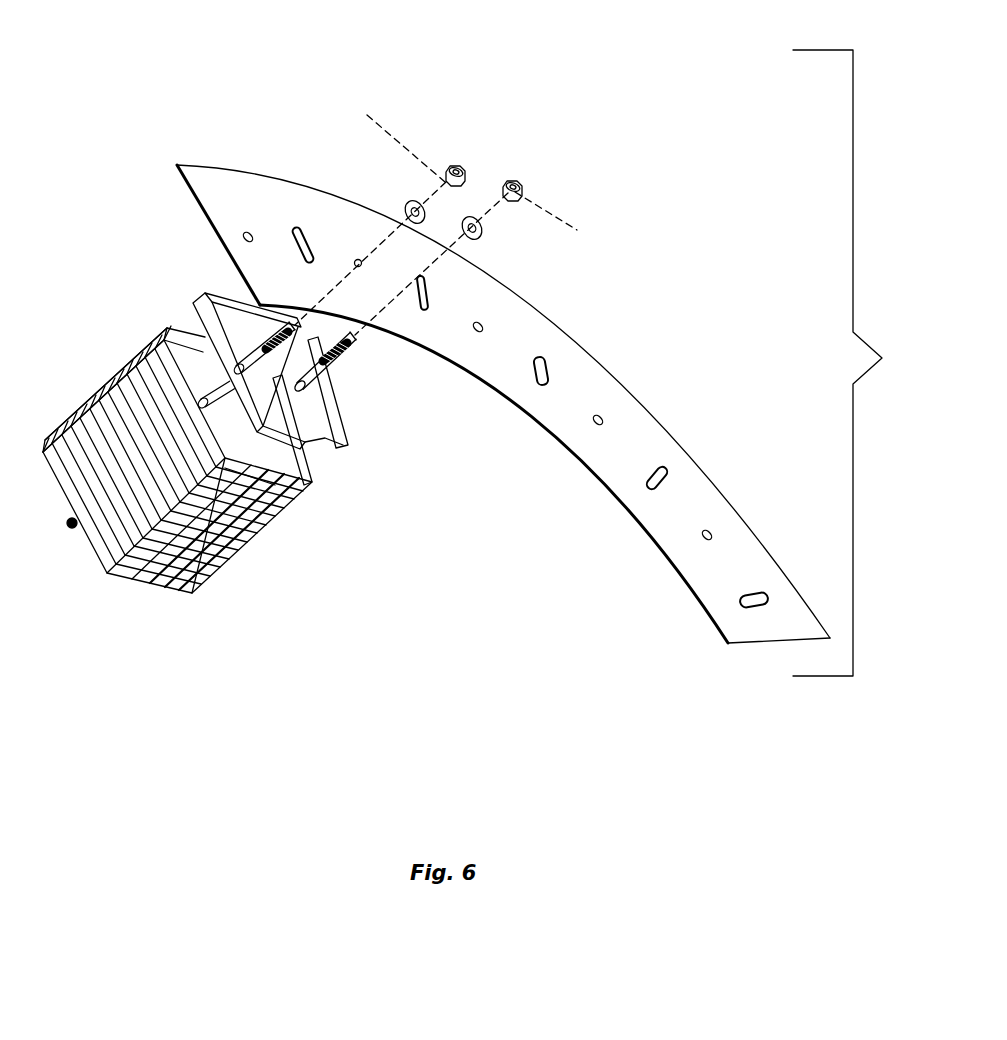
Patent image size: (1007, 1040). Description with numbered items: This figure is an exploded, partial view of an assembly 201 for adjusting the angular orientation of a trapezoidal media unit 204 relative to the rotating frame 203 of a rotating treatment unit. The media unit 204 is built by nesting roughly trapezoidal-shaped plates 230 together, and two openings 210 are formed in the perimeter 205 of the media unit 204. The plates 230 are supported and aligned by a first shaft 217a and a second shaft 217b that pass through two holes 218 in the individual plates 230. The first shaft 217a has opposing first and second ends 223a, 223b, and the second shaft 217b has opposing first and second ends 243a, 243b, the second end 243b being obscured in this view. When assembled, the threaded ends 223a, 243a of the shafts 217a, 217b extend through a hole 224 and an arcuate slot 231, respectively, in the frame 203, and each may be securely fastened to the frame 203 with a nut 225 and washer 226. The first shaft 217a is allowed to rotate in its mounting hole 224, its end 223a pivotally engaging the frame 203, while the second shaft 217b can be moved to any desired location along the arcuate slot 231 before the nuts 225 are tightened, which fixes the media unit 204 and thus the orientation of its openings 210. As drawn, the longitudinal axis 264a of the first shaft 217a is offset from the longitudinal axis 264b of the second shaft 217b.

The mounting assembly 201 is at (452, 81).
The rotating frame 203 is at (262, 172).
The media unit 204 is at (107, 382).
The perimeter 205 is at (140, 352).
The openings 210 is at (328, 317).
The first shaft 217a is at (263, 353).
The second shaft 217b is at (327, 378).
The holes 218 is at (315, 370).
The first end of first shaft 223a is at (323, 368).
The second end of first shaft 223b is at (74, 528).
The hole 224 is at (357, 258).
The nut 225 is at (452, 170).
The washer 226 is at (407, 205).
The trapezoidal plates 230 is at (192, 313).
The arcuate slot 231 is at (426, 292).
The first end of second shaft 243a is at (337, 357).
The second end of second shaft 243b is at (118, 586).
The longitudinal axis of first shaft 264a is at (370, 208).
The longitudinal axis of second shaft 264b is at (495, 263).